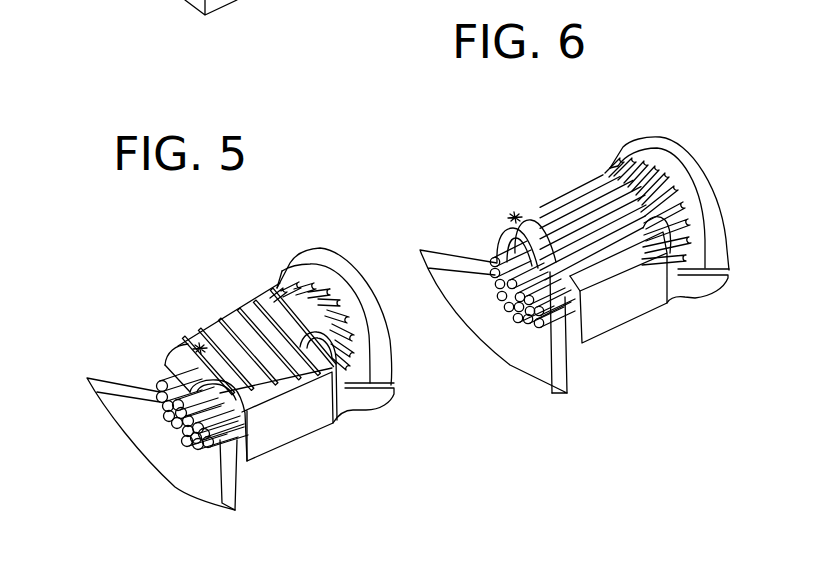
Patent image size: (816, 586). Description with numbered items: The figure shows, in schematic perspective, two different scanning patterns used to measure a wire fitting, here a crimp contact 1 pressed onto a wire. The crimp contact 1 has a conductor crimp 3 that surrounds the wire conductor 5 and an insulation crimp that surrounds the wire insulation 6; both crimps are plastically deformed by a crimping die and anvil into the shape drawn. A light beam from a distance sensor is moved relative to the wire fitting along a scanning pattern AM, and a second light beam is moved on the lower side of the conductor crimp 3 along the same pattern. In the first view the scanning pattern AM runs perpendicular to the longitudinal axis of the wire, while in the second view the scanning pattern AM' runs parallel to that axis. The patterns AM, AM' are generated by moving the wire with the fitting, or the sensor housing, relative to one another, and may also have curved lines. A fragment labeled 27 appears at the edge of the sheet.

In FIG. 5, the crimp contact 1 is at (140, 412).
In FIG. 6, the crimp contact 1 is at (470, 289).
In FIG. 5, the conductor crimp 3 is at (162, 362).
In FIG. 6, the conductor crimp 3 is at (500, 242).
In FIG. 5, the wire conductor 5 is at (168, 440).
In FIG. 6, the wire conductor 5 is at (528, 323).
In FIG. 5, the wire insulation 6 is at (380, 365).
In FIG. 6, the wire insulation 6 is at (658, 142).
In FIG. 5, the scanning pattern AM is at (267, 404).
In FIG. 6, the scanning pattern AM' is at (621, 300).
In FIG. 6, the element 27 is at (296, 0).